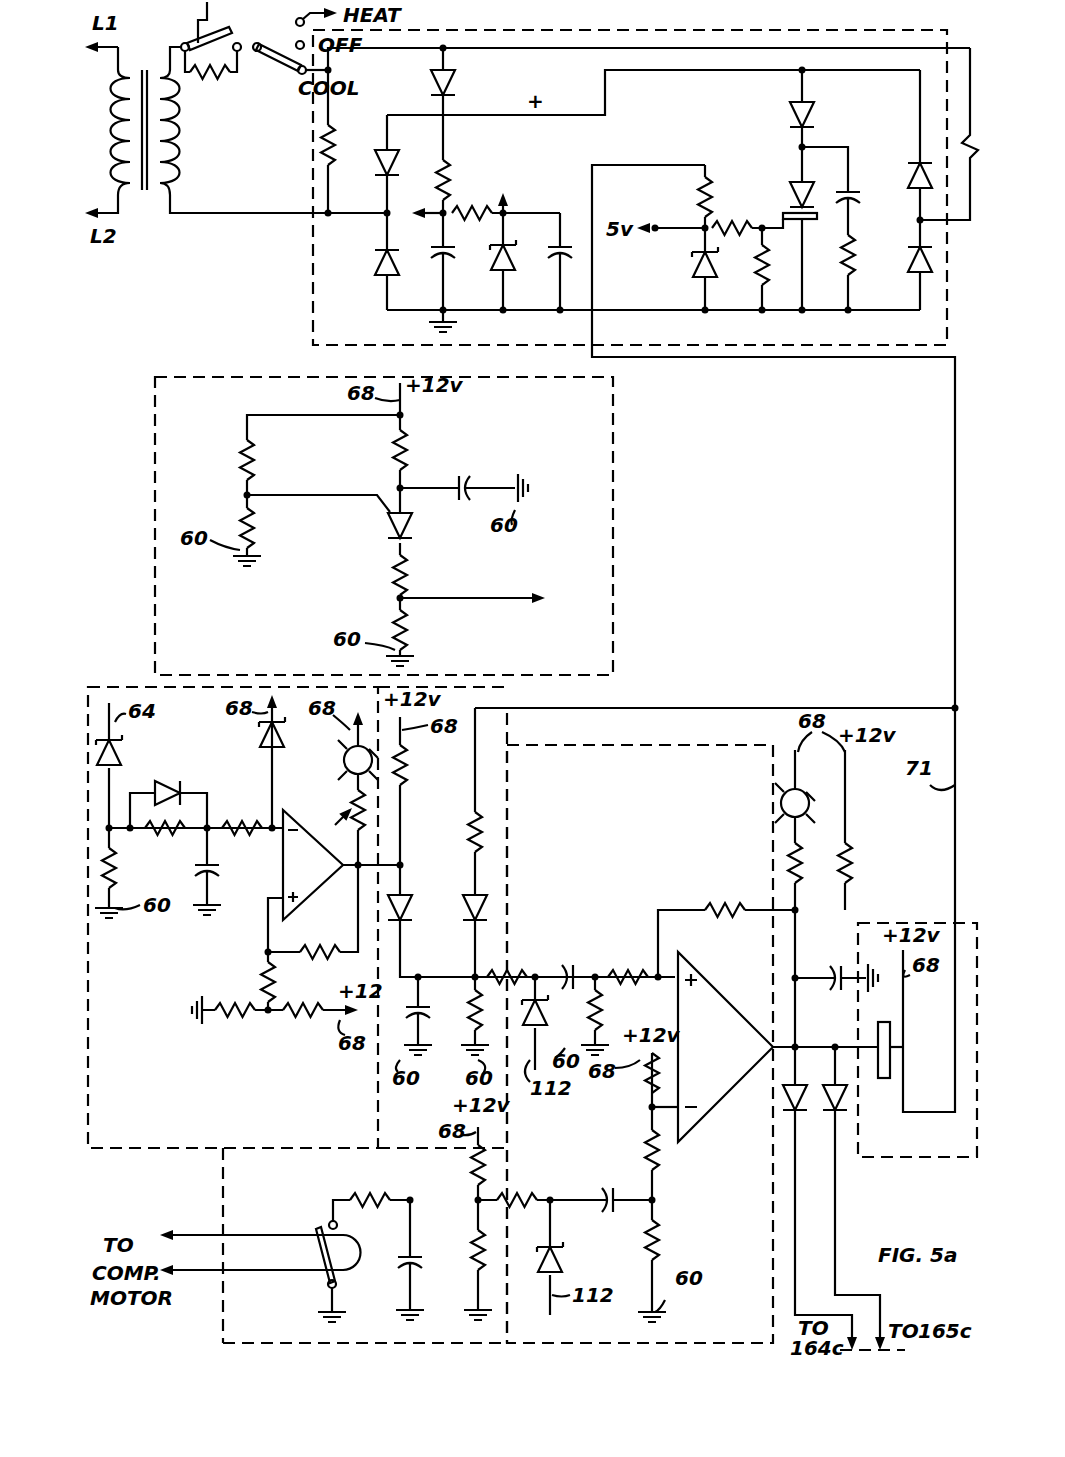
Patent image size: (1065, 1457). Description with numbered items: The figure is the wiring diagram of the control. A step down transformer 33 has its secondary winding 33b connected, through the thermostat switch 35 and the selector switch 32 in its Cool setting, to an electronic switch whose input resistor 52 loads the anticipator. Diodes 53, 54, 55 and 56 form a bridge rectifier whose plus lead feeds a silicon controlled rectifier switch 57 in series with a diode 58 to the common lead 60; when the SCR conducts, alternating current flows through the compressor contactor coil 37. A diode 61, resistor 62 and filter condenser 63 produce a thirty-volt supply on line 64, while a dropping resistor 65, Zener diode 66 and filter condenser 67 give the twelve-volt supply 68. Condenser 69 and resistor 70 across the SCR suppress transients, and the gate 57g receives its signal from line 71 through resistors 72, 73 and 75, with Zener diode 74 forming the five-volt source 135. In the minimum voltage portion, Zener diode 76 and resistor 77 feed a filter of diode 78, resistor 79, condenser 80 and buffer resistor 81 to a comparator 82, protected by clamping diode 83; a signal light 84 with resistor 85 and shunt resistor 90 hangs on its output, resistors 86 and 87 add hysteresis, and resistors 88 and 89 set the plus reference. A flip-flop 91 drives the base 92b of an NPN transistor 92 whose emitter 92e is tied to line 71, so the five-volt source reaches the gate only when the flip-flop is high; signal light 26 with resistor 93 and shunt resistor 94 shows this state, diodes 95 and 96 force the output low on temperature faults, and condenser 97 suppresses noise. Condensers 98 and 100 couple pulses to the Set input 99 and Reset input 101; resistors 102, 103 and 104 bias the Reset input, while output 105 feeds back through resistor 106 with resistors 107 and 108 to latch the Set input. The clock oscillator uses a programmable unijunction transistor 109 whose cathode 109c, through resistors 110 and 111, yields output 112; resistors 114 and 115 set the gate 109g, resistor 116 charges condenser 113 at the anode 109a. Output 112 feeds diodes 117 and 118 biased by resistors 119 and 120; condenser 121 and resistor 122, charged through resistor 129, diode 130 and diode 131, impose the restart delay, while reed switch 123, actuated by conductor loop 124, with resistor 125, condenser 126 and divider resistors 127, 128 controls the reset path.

The signal light 26 is at (805, 790).
The selector switch 32 is at (275, 70).
The output step down transformer 33 is at (236, 165).
The secondary winding 33b is at (172, 140).
The room thermostat switch 35 is at (222, 30).
The compressor contactor coil 37 is at (988, 162).
The input resistor 52 is at (338, 140).
The diode 53 is at (378, 178).
The diode 54 is at (375, 258).
The diode 55 is at (918, 155).
The diode 56 is at (916, 275).
The silicon controlled rectifier switch 57 is at (790, 178).
The gate 57g is at (812, 222).
The diode 58 is at (812, 112).
The common lead 60 is at (470, 318).
The diode 61 is at (452, 82).
The resistor 62 is at (450, 168).
The filter condenser 63 is at (440, 262).
The 30-volt + line 64 is at (440, 215).
The dropping resistor 65 is at (485, 200).
The Zener diode 66 is at (503, 280).
The filter condenser 67 is at (562, 240).
The 12-volt regulated secondary direct current voltage supply 68 is at (520, 210).
The condenser 69 is at (852, 200).
The resistor 70 is at (864, 245).
The line 71 is at (628, 175).
The resistor 72 is at (712, 195).
The resistor 73 is at (725, 222).
The Zener diode 74 is at (700, 283).
The resistor 75 is at (768, 275).
The Zener diode 76 is at (120, 772).
The resistor 77 is at (118, 880).
The diode 78 is at (175, 783).
The resistor 79 is at (150, 840).
The condenser 80 is at (218, 878).
The buffer resistor 81 is at (242, 815).
The comparator 82 is at (310, 810).
The clamping diode 83 is at (278, 748).
The signal light 84 is at (368, 735).
The resistor 85 is at (342, 822).
The resistor 86 is at (322, 962).
The resistor 87 is at (262, 980).
The resistor 88 is at (235, 1020).
The resistor 89 is at (300, 1020).
The resistor 90 is at (405, 760).
The flip-flop 91 is at (735, 985).
The NPN transistor 92 is at (893, 1035).
The base 92b is at (875, 1065).
The emitter 92e is at (892, 1070).
The resistor 93 is at (798, 875).
The shunt resistor 94 is at (848, 875).
The diode 95 is at (830, 1115).
The diode 96 is at (800, 1115).
The condenser 97 is at (825, 965).
The condenser 98 is at (580, 965).
The (+) input (Set) 99 is at (672, 985).
The condenser 100 is at (620, 1188).
The (−) input (Reset) 101 is at (665, 1115).
The resistor 102 is at (645, 1090).
The resistor 103 is at (660, 1150).
The resistor 104 is at (660, 1238).
The flip-flop output 105 is at (770, 1047).
The feedback resistor 106 is at (735, 900).
The resistor 107 is at (630, 965).
The resistor 108 is at (603, 1012).
The programmable unijunction transistor 109 is at (385, 530).
The anode 109a is at (408, 500).
The cathode 109c is at (412, 545).
The gate 109g is at (380, 502).
The resistor 110 is at (406, 575).
The resistor 111 is at (408, 630).
The clock pulse output 112 is at (485, 610).
The condenser 113 is at (457, 475).
The resistor 114 is at (255, 465).
The resistor 115 is at (255, 530).
The resistor 116 is at (408, 445).
The diode 117 is at (545, 1008).
The diode 118 is at (558, 1258).
The resistor 119 is at (508, 965).
The resistor 120 is at (515, 1190).
The condenser 121 is at (425, 1015).
The resistor 122 is at (468, 995).
The reed switch 123 is at (316, 1226).
The conductor loop 124 is at (272, 1215).
The resistor 125 is at (385, 1175).
The condenser 126 is at (412, 1245).
The resistor 127 is at (470, 1160).
The resistor 128 is at (470, 1263).
The resistor 129 is at (468, 815).
The diode 130 is at (470, 890).
The diode 131 is at (412, 908).
The 5-volt regulated secondary direct current voltage supply 135 is at (663, 232).